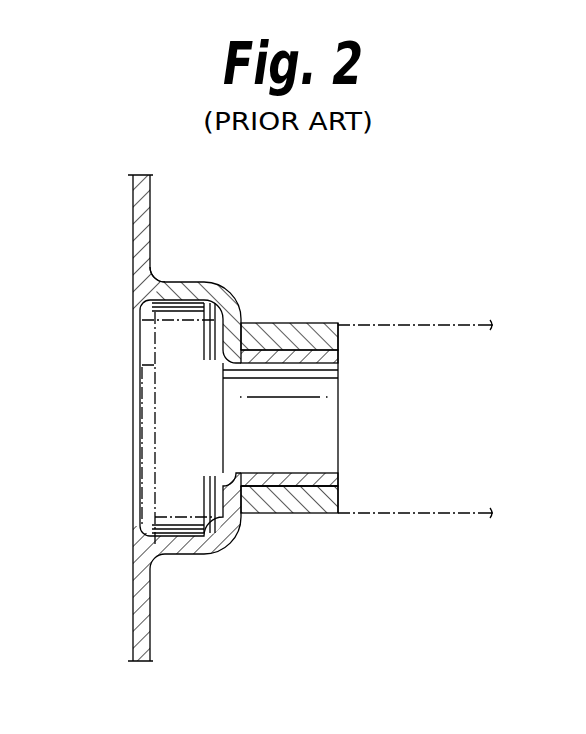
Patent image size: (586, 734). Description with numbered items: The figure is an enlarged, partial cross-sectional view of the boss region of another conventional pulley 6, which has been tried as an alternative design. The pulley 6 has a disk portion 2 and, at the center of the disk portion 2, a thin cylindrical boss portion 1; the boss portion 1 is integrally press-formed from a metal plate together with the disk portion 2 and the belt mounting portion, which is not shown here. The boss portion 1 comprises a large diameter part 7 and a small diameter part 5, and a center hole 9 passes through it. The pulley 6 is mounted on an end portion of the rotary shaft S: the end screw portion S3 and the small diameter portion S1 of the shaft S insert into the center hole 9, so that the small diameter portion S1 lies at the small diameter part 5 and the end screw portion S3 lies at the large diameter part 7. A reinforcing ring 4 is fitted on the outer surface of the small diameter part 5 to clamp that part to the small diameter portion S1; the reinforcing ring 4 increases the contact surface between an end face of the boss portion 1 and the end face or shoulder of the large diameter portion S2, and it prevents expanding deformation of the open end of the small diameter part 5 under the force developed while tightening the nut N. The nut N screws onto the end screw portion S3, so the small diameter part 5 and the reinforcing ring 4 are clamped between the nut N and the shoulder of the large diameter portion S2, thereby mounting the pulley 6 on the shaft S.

The disk portion 2 is at (140, 201).
The pulley 6 is at (170, 270).
The large diameter part 7 is at (197, 283).
The boss portion 1 is at (239, 397).
The small diameter part 5 is at (290, 357).
The reinforcing ring 4 is at (315, 333).
The center hole 9 is at (332, 462).
The small diameter portion S1 is at (298, 462).
The large diameter portion S2 is at (415, 330).
The end screw portion S3 is at (148, 435).
The rotary shaft S is at (447, 528).
The nut N is at (180, 322).